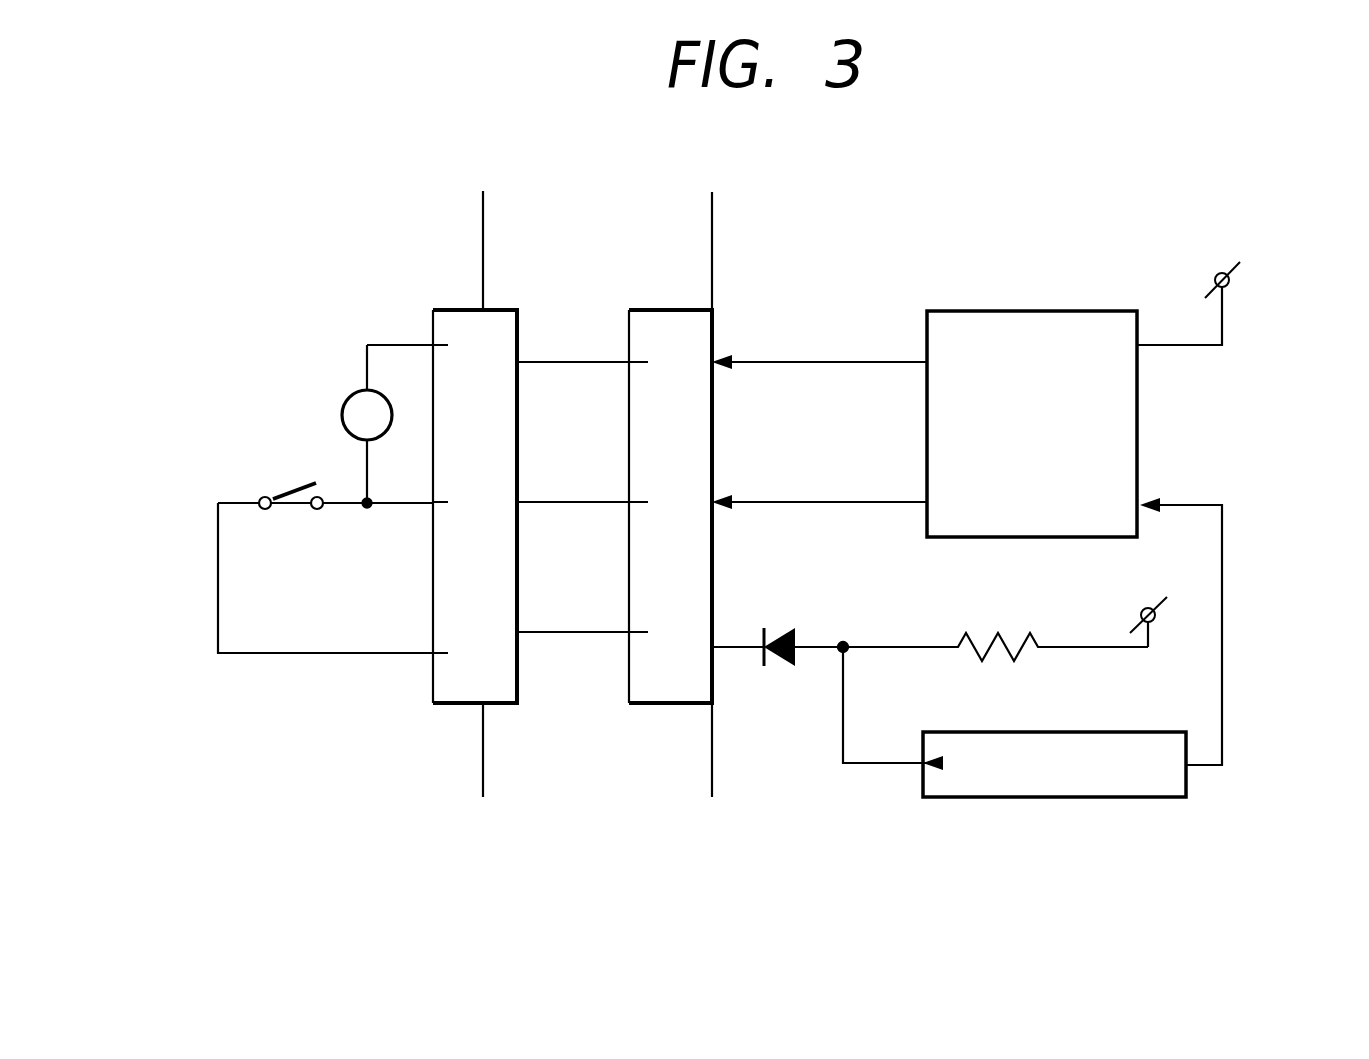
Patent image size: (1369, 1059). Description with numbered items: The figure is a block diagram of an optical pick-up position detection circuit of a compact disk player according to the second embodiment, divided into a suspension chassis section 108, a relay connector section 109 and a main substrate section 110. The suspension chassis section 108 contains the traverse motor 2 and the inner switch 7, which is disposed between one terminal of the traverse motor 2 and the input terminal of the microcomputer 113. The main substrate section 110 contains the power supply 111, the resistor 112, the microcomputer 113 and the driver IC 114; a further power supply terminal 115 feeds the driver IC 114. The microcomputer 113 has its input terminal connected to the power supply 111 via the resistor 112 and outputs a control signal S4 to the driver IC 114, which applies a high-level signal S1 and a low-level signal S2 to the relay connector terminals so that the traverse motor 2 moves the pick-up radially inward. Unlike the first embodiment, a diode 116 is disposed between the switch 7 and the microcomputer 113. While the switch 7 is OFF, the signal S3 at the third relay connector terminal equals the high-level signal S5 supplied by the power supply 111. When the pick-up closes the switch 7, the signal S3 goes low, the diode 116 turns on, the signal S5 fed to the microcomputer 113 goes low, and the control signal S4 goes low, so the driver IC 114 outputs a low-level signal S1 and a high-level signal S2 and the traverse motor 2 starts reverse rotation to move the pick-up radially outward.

The traverse motor 2 is at (346, 396).
The inner switch 7 is at (283, 477).
The suspension chassis section 108 is at (367, 423).
The relay connector section 109 is at (597, 470).
The main substrate section 110 is at (812, 395).
The power supply 111 is at (1150, 606).
The resistor 112 is at (991, 634).
The microcomputer 113 is at (1090, 797).
The driver IC 114 is at (1040, 310).
The power supply terminal 115 is at (1212, 287).
The diode 116 is at (785, 632).
The signal S1 is at (551, 371).
The signal S2 is at (551, 511).
The signal S3 is at (551, 641).
The control signal S4 is at (1235, 586).
The signal S5 is at (858, 684).